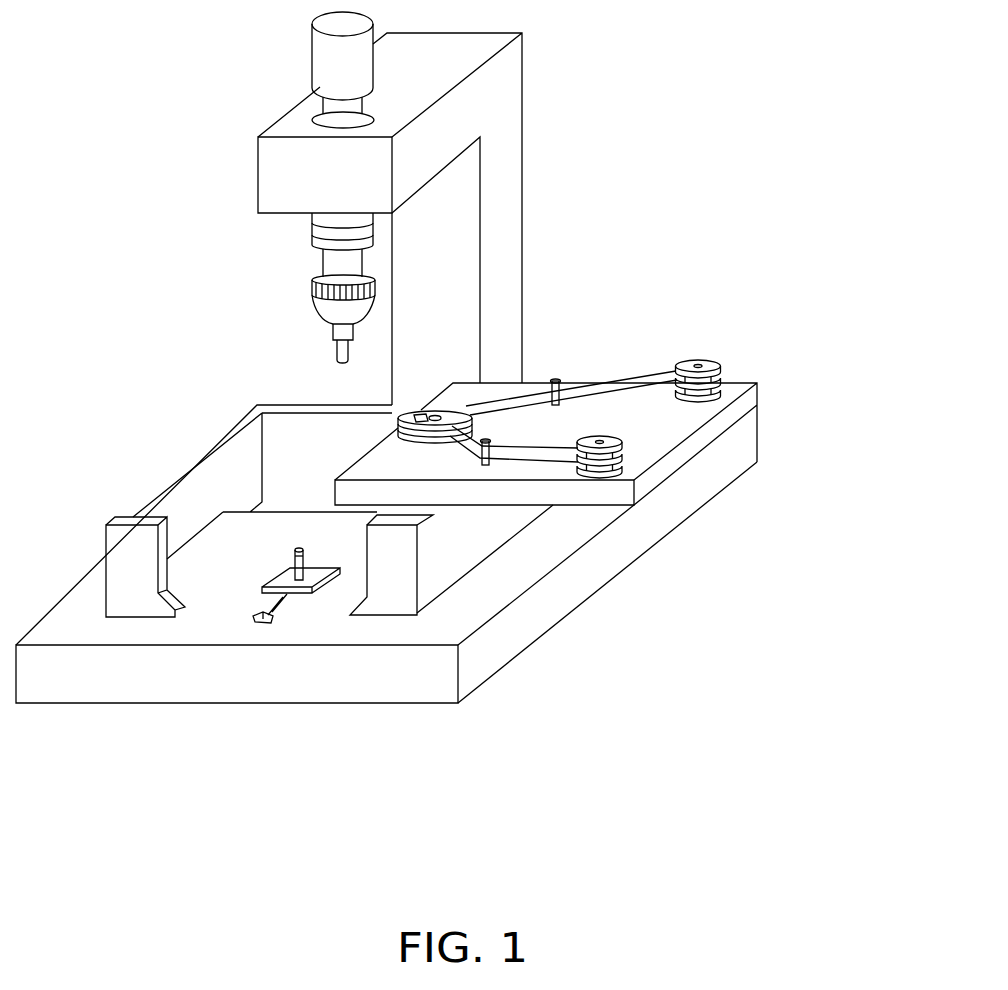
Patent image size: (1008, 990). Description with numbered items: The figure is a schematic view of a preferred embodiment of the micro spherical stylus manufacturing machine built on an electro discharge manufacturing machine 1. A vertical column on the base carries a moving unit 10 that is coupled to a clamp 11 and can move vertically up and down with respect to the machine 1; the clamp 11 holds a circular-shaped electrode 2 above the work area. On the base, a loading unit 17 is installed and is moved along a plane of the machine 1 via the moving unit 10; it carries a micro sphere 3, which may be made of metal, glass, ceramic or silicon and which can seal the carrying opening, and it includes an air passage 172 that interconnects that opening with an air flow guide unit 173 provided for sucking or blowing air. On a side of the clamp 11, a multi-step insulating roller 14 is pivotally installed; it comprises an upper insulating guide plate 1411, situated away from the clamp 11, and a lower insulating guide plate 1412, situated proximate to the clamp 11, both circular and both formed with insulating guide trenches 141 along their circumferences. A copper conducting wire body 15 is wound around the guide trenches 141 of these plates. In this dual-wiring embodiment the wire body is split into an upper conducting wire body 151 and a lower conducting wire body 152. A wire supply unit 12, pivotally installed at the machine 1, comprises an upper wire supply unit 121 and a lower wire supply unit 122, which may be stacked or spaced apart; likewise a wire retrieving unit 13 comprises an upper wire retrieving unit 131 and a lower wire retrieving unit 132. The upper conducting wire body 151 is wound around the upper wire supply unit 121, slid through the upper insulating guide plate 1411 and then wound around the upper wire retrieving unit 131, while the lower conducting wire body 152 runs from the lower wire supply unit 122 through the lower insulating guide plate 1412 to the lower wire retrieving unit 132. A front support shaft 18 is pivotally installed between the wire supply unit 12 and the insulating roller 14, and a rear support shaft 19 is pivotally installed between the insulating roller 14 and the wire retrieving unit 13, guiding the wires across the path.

The electro discharge manufacturing machine 1 is at (835, 825).
The moving unit 10 is at (277, 172).
The clamp 11 is at (317, 280).
The circular-shaped electrode 2 is at (340, 353).
The micro sphere 3 is at (252, 547).
The loading unit 17 is at (146, 480).
The air passage 172 is at (275, 603).
The air flow guide unit 173 is at (263, 625).
The insulating roller 14 is at (421, 331).
The insulating guide trenches 141 is at (407, 349).
The upper insulating guide plate 1411 is at (423, 413).
The lower insulating guide plate 1412 is at (468, 420).
The conducting wire body 15 is at (651, 333).
The upper conducting wire body 151 is at (625, 386).
The lower conducting wire body 152 is at (643, 394).
The wire supply unit 12 is at (798, 422).
The upper wire supply unit 121 is at (720, 376).
The lower wire supply unit 122 is at (754, 421).
The wire retrieving unit 13 is at (711, 511).
The upper wire retrieving unit 131 is at (624, 455).
The lower wire retrieving unit 132 is at (665, 509).
The front support shaft 18 is at (555, 405).
The rear support shaft 19 is at (485, 466).